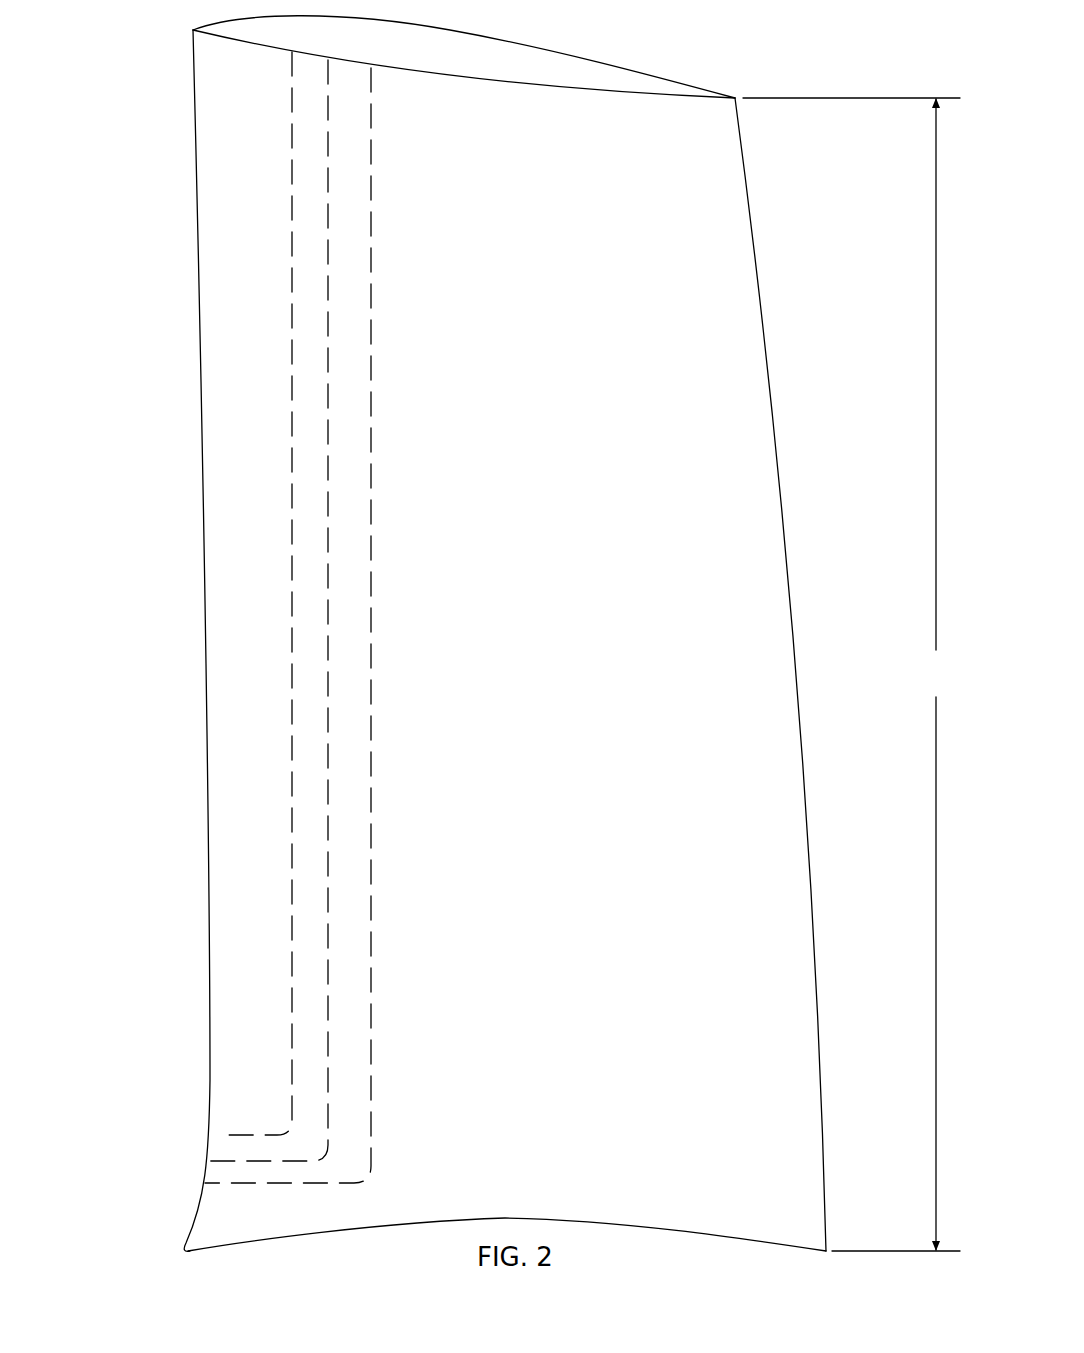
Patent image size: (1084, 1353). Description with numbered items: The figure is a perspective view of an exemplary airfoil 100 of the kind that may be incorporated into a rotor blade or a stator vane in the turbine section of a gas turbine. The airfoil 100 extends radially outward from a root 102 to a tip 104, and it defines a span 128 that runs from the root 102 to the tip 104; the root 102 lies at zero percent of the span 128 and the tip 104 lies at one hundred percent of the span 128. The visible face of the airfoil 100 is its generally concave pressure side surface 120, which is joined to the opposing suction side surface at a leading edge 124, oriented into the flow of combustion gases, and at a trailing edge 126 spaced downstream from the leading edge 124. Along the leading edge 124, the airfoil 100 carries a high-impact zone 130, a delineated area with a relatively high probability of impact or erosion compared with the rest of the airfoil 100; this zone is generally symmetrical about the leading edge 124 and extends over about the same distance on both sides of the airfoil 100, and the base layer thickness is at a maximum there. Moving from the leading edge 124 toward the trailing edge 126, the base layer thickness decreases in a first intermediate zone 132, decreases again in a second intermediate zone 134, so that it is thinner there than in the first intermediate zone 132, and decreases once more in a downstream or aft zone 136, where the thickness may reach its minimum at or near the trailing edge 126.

The airfoil 100 is at (147, 45).
The root 102 is at (268, 1254).
The tip 104 is at (652, 51).
The pressure side surface 120 is at (557, 494).
The leading edge 124 is at (203, 667).
The trailing edge 126 is at (791, 565).
The span 128 is at (852, 674).
The high-impact zone 130 is at (233, 880).
The first intermediate zone 132 is at (230, 1150).
The second intermediate zone 134 is at (222, 1173).
The aft zone 136 is at (205, 1228).